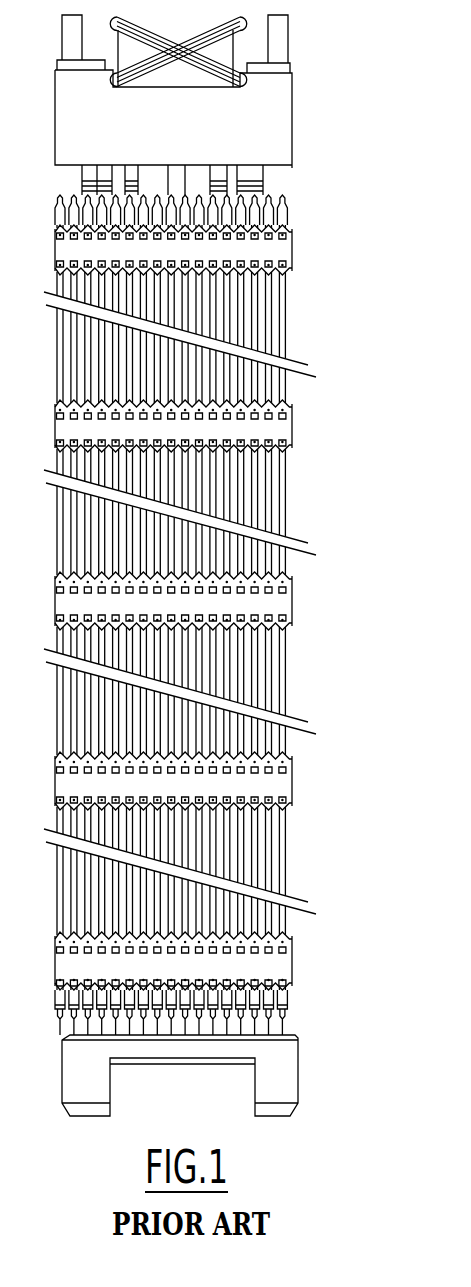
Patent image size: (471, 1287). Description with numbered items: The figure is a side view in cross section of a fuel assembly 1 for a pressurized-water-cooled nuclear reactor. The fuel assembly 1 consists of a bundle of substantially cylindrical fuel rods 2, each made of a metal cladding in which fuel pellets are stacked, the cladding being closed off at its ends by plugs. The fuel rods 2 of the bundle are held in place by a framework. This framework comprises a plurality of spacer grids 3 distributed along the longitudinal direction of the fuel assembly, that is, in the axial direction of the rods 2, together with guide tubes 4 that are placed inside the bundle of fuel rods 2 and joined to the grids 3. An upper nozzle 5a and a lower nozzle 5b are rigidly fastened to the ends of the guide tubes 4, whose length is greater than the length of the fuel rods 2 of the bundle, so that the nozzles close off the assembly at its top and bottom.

The fuel assembly 1 is at (221, 565).
The fuel rods 2 is at (265, 860).
The spacer grids 3 is at (338, 960).
The guide tubes 4 is at (230, 168).
The upper nozzle 5a is at (277, 110).
The lower nozzle 5b is at (280, 1078).